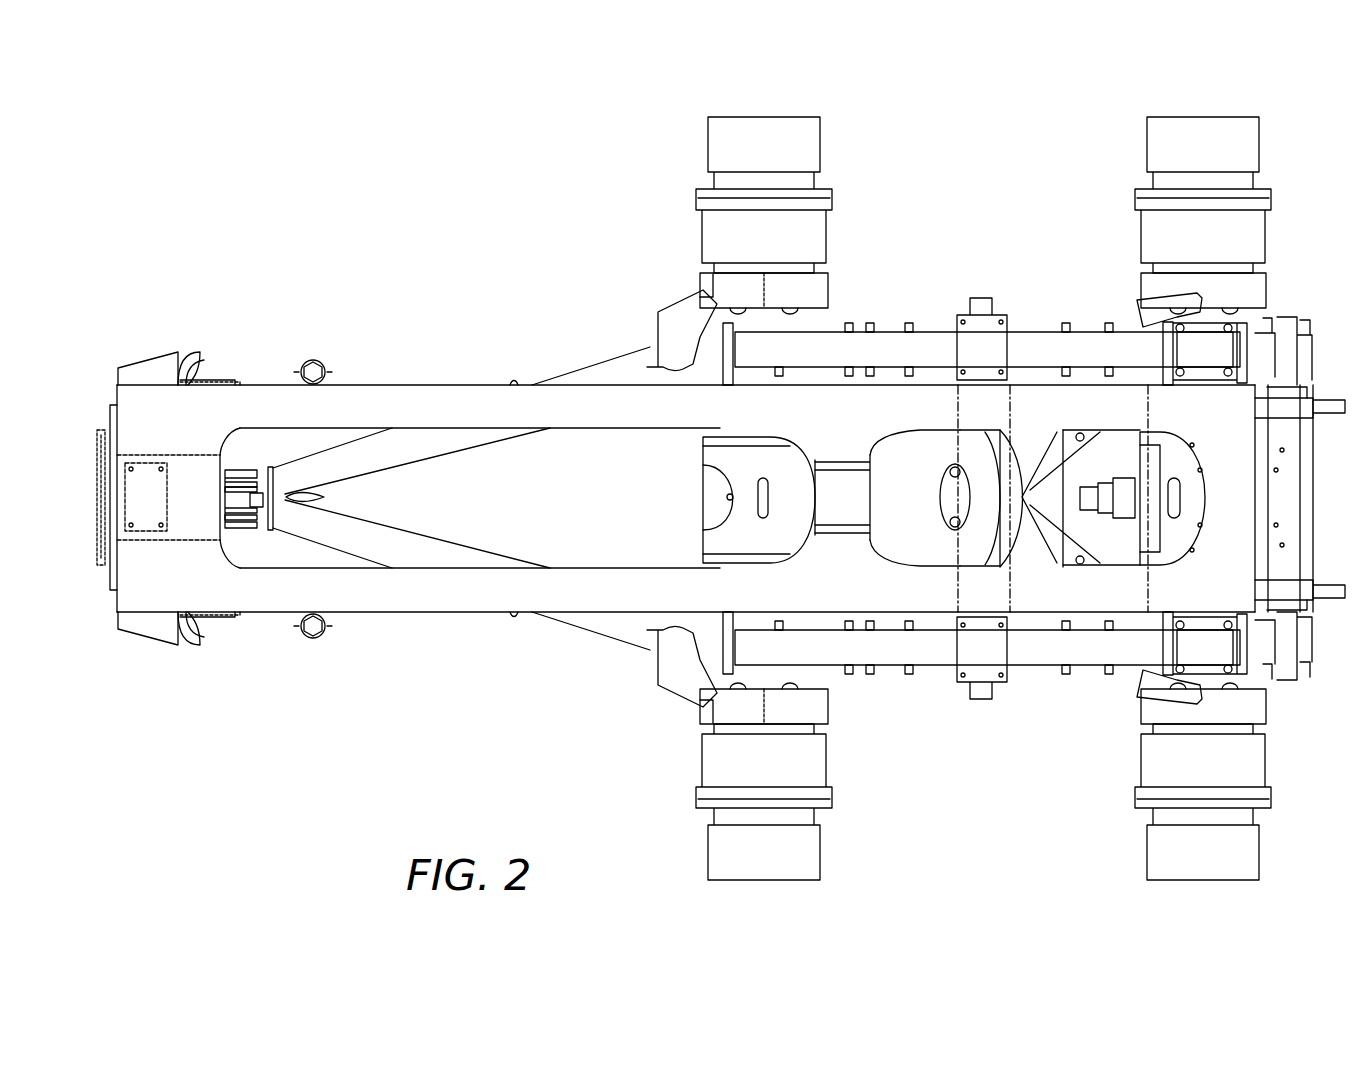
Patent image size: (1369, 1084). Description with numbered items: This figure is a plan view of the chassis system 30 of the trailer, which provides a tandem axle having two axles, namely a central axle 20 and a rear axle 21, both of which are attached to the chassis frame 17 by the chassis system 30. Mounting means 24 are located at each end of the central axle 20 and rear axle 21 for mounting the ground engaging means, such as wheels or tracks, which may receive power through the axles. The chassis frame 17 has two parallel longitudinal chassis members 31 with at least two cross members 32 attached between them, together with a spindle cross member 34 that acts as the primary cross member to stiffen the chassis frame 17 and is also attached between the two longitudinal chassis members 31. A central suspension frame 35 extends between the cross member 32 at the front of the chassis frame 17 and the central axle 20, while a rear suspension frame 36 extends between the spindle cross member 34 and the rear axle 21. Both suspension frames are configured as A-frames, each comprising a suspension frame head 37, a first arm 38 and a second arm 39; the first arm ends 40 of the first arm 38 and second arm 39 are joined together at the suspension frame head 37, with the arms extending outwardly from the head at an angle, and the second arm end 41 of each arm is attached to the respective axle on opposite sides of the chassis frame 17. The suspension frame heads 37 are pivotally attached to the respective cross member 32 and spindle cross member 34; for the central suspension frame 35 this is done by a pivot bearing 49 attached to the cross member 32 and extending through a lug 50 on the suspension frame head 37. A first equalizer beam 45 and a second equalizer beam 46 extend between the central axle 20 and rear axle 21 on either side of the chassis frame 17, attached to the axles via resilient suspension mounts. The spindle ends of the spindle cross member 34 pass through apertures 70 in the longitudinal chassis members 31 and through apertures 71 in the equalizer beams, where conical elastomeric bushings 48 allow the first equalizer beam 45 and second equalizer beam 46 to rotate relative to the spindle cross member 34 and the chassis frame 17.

The chassis frame 17 is at (128, 401).
The central axle 20 is at (845, 252).
The rear axle 21 is at (1289, 252).
The mounting means 24 is at (765, 116).
The chassis system 30 is at (526, 278).
The longitudinal chassis members 31 is at (240, 385).
The cross members 32 is at (140, 565).
The spindle cross member 34 is at (950, 545).
The central suspension frame 35 is at (312, 440).
The rear suspension frame 36 is at (996, 565).
The suspension frame head 37 is at (318, 494).
The first arm 38 is at (428, 540).
The second arm 39 is at (482, 445).
The first arm end 40 is at (290, 542).
The second arm end 41 is at (610, 356).
The first equalizer beam 45 is at (918, 655).
The second equalizer beam 46 is at (918, 345).
The bushings 48 is at (992, 320).
The pivot bearing 49 is at (232, 470).
The lug 50 is at (252, 492).
The apertures 70 is at (946, 404).
The apertures 71 is at (1020, 356).